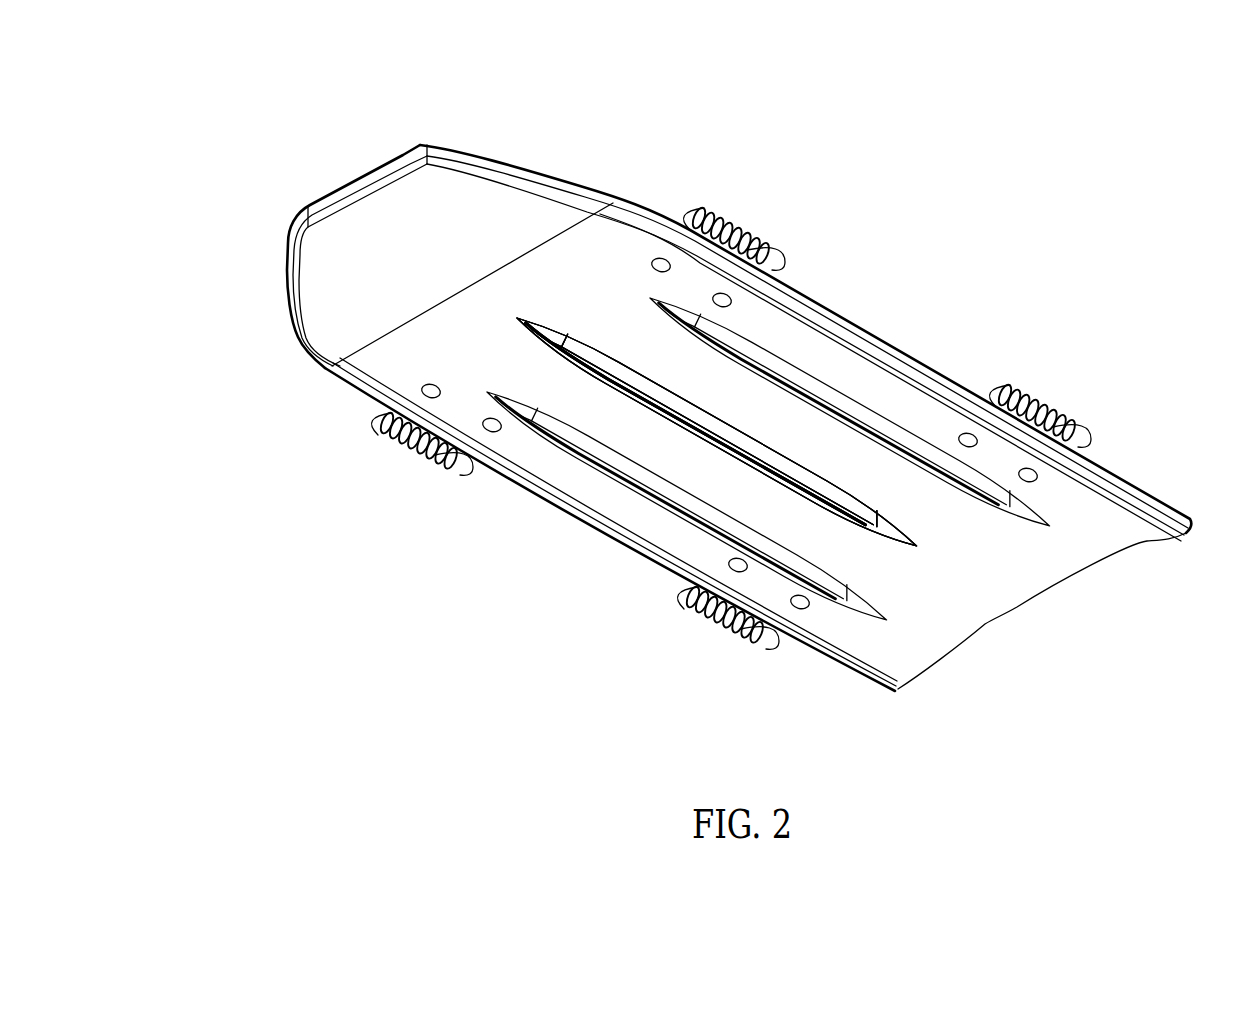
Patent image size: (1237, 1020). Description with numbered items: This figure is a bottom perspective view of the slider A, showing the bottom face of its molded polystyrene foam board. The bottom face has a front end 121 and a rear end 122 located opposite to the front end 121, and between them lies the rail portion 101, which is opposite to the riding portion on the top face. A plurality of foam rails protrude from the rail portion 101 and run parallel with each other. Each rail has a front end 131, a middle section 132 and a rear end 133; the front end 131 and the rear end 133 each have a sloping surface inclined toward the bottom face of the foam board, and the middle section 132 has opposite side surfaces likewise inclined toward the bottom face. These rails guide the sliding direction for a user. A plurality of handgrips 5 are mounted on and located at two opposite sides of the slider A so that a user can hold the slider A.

The front end 121 is at (347, 175).
The rear end 122 is at (1037, 613).
The slider A is at (703, 178).
The handgrips 5 is at (767, 238).
The front end of rail 131 is at (548, 327).
The middle section of rail 132 is at (753, 443).
The rear end of rail 133 is at (908, 533).
The rail portion 101 is at (777, 688).